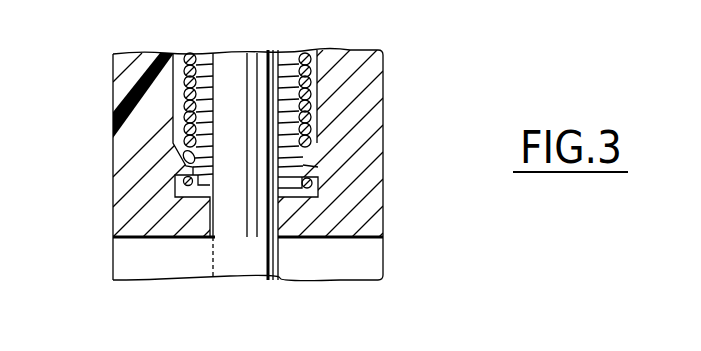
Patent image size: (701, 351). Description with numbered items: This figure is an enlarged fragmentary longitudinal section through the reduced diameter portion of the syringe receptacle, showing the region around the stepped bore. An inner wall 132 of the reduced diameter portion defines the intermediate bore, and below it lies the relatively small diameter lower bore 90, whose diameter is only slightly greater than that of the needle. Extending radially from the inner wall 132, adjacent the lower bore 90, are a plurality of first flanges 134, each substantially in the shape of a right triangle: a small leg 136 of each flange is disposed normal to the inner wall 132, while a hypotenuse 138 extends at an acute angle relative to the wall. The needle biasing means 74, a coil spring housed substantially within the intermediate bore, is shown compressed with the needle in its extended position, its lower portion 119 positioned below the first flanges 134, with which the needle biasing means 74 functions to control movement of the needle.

The needle biasing means 74 is at (198, 63).
The lower bore 90 is at (279, 212).
The lower portion of the first coil spring 119 is at (183, 233).
The inner wall 132 is at (333, 62).
The first flanges 134 is at (184, 172).
The small leg 136 is at (313, 180).
The hypotenuse 138 is at (303, 167).